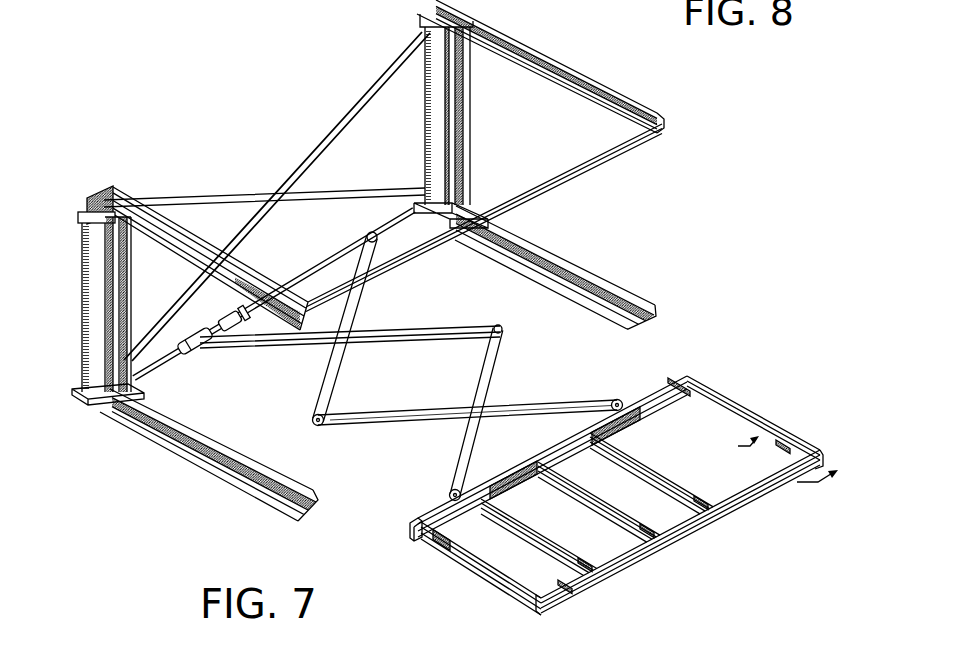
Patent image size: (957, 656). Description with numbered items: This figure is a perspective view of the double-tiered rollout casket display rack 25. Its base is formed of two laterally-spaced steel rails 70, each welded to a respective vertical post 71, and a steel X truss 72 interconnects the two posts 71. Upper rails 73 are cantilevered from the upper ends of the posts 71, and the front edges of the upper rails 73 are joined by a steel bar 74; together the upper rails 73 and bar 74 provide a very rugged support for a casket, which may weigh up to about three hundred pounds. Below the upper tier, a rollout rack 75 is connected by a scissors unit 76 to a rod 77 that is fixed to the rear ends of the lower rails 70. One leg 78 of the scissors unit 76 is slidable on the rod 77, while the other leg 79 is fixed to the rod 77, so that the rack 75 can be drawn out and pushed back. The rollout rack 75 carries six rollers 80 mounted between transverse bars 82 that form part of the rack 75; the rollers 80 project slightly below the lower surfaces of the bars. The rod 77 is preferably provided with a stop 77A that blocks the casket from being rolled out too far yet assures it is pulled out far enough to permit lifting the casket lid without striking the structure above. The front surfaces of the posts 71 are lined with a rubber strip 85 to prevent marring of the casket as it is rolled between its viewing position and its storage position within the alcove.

The two-tiered casket display rack 25 is at (676, 112).
The steel rails 70 is at (600, 272).
The vertical post 71 is at (424, 127).
The X truss 72 is at (300, 160).
The upper rails 73 is at (535, 58).
The steel bar 74 is at (612, 160).
The rollout rack 75 is at (748, 403).
The scissors unit 76 is at (378, 428).
The rod 77 is at (332, 262).
The stop 77A is at (236, 345).
The leg 78 is at (263, 348).
The leg 79 is at (377, 258).
The rollers 80 is at (671, 401).
The transverse bars 82 is at (702, 381).
The rubber strip 85 is at (455, 119).